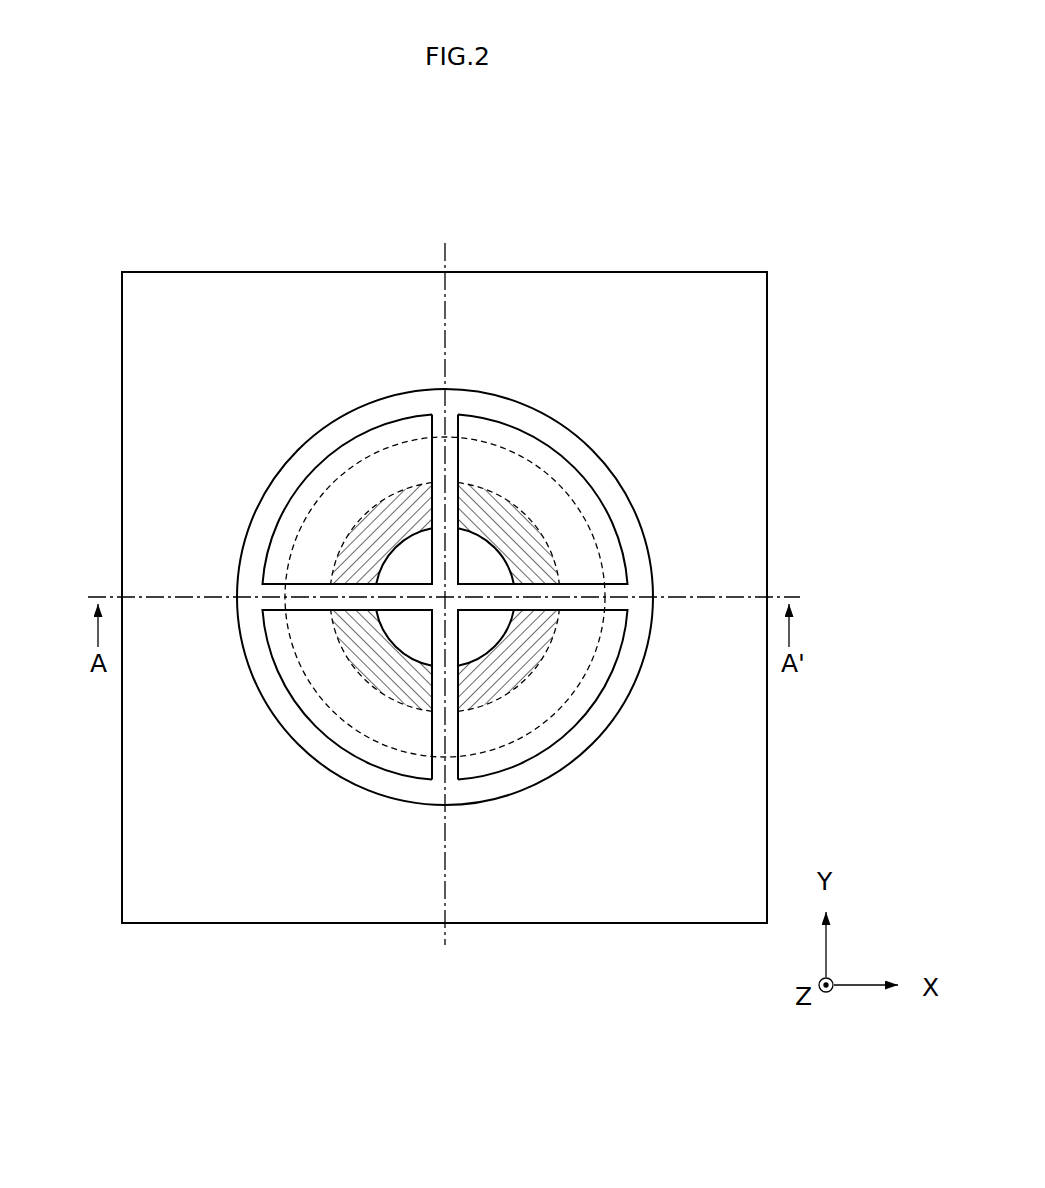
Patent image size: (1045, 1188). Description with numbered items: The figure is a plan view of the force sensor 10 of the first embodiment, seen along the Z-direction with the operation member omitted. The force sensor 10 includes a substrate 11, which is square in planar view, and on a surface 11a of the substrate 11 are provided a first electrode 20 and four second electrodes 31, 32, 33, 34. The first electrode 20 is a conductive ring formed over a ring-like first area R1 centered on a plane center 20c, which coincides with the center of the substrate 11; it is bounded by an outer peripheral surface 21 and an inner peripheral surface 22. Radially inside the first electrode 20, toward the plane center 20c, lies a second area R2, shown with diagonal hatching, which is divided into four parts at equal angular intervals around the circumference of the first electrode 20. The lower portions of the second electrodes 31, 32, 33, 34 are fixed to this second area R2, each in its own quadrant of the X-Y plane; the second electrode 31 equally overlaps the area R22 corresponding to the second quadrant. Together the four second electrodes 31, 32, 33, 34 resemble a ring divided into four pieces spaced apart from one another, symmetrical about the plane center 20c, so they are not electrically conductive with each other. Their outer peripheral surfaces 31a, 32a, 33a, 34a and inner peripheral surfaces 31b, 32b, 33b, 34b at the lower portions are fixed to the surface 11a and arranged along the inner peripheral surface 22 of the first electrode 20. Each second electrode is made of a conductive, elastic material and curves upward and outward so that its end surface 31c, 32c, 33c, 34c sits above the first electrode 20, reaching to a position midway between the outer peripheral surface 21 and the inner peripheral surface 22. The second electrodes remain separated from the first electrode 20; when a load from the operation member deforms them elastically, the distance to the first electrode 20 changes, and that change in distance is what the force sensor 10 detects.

The force sensor 10 is at (508, 559).
The substrate 11 is at (508, 597).
The surface of the substrate 11a is at (755, 357).
The first electrode 20 is at (640, 515).
The plane center 20c is at (445, 597).
The outer peripheral surface of the first electrode 21 is at (648, 542).
The inner peripheral surface of the first electrode 22 is at (603, 573).
The second electrode 31 is at (407, 413).
The outer peripheral surface of the second electrode 31a is at (397, 483).
The inner peripheral surface of the second electrode 31b is at (395, 553).
The end surface of the second electrode 31c is at (310, 467).
The second electrode 32 is at (483, 413).
The outer peripheral surface of the second electrode 32a is at (493, 483).
The inner peripheral surface of the second electrode 32b is at (495, 553).
The end surface of the second electrode 32c is at (580, 467).
The second electrode 33 is at (542, 758).
The outer peripheral surface of the second electrode 33a is at (553, 643).
The inner peripheral surface of the second electrode 33b is at (498, 650).
The end surface of the second electrode 33c is at (580, 725).
The second electrode 34 is at (348, 758).
The outer peripheral surface of the second electrode 34a is at (335, 642).
The inner peripheral surface of the second electrode 34b is at (398, 645).
The end surface of the second electrode 34c is at (292, 717).
The first area R1 is at (403, 790).
The second area R2 is at (358, 540).
The area corresponding to the second quadrant R22 is at (72, 463).